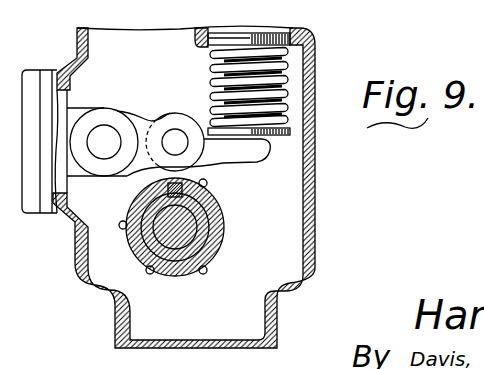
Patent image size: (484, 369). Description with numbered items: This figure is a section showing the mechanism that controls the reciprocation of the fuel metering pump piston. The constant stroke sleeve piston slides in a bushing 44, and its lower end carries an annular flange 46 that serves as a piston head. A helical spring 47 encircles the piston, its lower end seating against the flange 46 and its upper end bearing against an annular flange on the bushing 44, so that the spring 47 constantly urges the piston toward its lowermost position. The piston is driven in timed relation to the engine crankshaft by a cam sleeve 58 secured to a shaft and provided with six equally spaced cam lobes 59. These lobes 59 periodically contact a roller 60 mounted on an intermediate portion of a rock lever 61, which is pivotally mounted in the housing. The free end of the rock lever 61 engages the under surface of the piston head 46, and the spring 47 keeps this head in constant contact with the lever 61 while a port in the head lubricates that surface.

The bushing 44 is at (262, 32).
The helical spring 47 is at (210, 62).
The annular flange 46 is at (283, 136).
The rock lever 61 is at (110, 107).
The roller 60 is at (172, 113).
The cam sleeve 58 is at (226, 207).
The cam lobes 59 is at (203, 275).